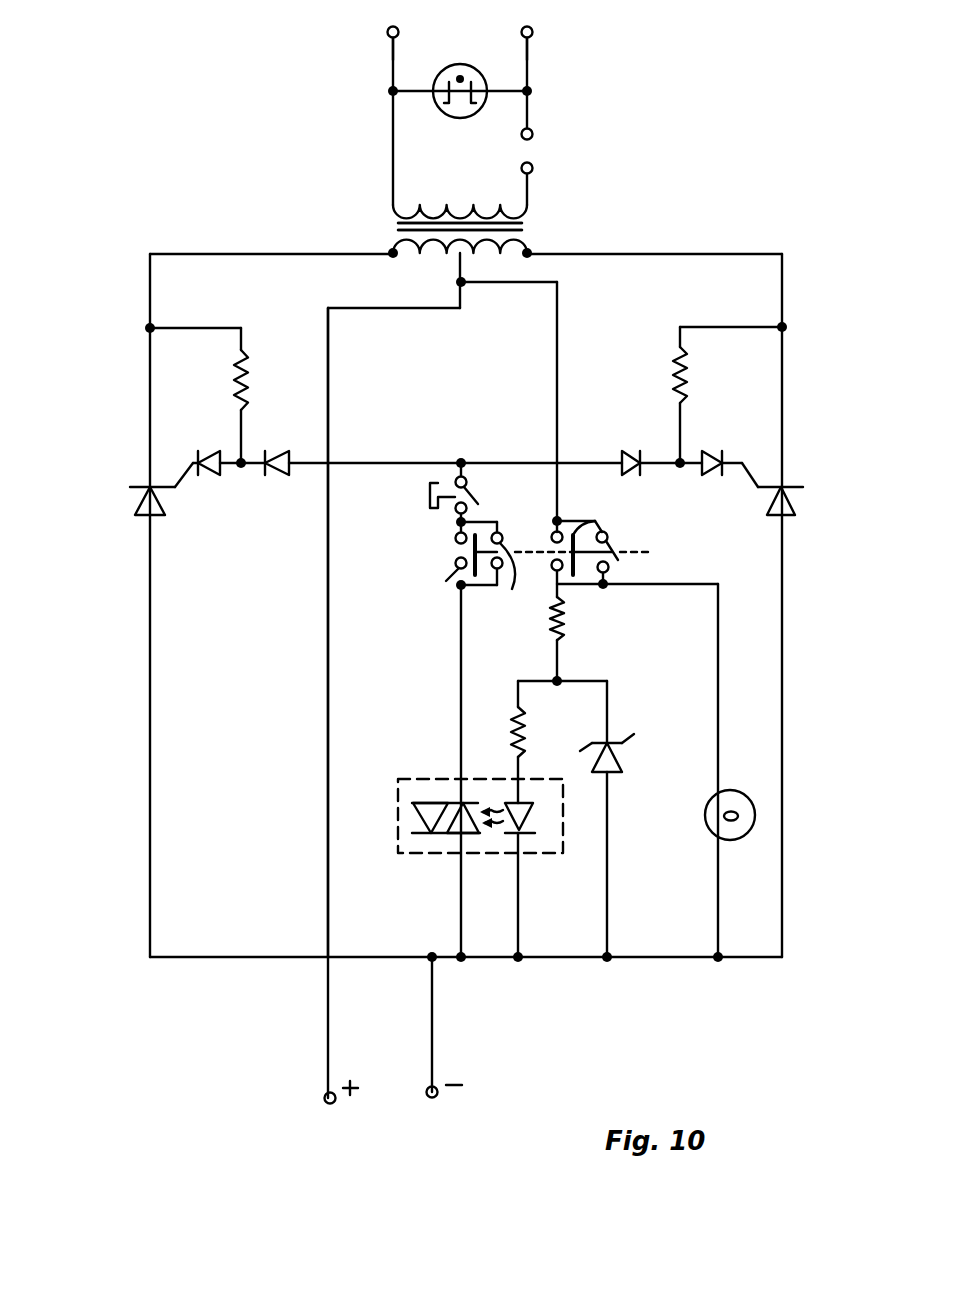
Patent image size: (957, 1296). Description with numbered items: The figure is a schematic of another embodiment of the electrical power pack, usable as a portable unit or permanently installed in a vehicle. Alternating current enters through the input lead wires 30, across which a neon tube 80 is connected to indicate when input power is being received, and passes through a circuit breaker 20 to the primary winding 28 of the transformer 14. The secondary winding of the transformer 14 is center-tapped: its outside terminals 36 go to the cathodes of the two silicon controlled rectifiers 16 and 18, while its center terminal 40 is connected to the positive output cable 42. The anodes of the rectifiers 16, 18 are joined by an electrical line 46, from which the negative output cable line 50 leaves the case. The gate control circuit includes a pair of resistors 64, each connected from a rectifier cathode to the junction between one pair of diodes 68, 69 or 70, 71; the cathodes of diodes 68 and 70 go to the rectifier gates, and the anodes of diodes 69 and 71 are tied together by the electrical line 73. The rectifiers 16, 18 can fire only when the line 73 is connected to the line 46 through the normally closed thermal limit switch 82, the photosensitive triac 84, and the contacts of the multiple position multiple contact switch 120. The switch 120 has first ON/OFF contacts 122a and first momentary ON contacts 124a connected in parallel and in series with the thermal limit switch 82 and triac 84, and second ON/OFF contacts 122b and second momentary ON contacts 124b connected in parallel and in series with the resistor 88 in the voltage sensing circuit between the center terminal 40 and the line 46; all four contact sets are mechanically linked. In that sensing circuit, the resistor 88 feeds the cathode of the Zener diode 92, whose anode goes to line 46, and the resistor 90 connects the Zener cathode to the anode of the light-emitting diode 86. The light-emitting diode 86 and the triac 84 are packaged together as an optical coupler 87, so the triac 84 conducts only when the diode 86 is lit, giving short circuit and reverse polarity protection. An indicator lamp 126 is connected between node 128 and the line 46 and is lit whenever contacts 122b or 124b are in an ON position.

The input lead wires 30 is at (393, 62).
The neon tube 80 is at (461, 64).
The circuit breaker 20 is at (537, 128).
The primary winding 28 is at (463, 204).
The transformer 14 is at (552, 222).
The outside terminals 36 is at (392, 251).
The center terminal 40 is at (459, 284).
The resistors 64 is at (242, 392).
The diode 68 is at (217, 478).
The diode 69 is at (284, 478).
The diode 70 is at (708, 452).
The diode 71 is at (631, 455).
The silicon controlled rectifier 16 is at (130, 491).
The silicon controlled rectifier 18 is at (797, 497).
The electrical line 73 is at (468, 460).
The thermal limit switch 82 is at (478, 490).
The multiple position multiple contact switch 120 is at (447, 552).
The first momentary ON contacts 124a is at (446, 581).
The first ON/OFF contacts 122a is at (496, 590).
The second momentary ON contacts 124b is at (595, 519).
The second ON/OFF contacts 122b is at (608, 546).
The node 128 is at (606, 587).
The resistor 88 is at (550, 630).
The resistor 90 is at (524, 733).
The Zener diode 92 is at (626, 765).
The optical coupler 87 is at (425, 859).
The photosensitive triac 84 is at (410, 815).
The light-emitting diode 86 is at (535, 818).
The indicator lamp 126 is at (712, 829).
The output cable 42 is at (328, 877).
The electrical line 46 is at (246, 964).
The output cable line 50 is at (434, 1000).